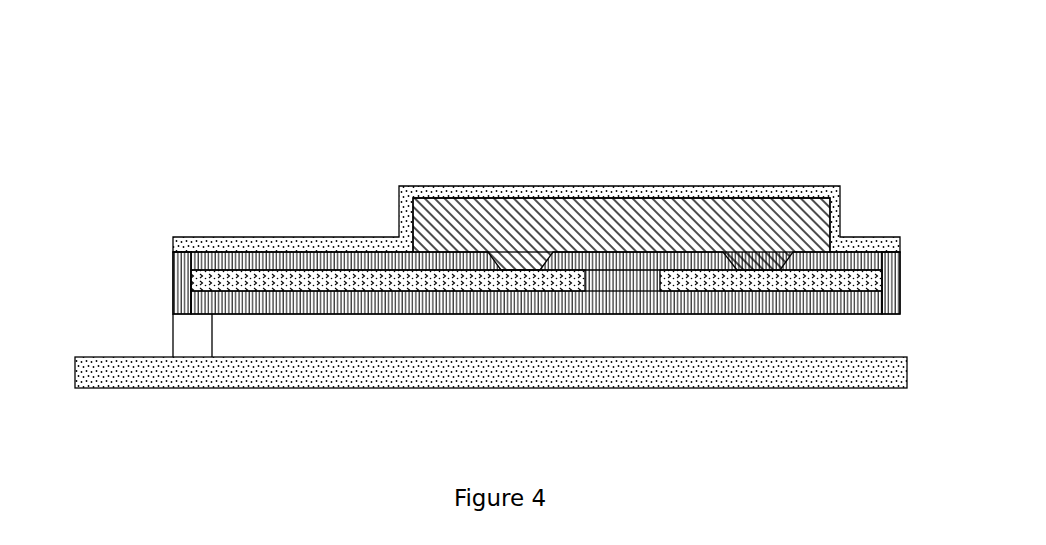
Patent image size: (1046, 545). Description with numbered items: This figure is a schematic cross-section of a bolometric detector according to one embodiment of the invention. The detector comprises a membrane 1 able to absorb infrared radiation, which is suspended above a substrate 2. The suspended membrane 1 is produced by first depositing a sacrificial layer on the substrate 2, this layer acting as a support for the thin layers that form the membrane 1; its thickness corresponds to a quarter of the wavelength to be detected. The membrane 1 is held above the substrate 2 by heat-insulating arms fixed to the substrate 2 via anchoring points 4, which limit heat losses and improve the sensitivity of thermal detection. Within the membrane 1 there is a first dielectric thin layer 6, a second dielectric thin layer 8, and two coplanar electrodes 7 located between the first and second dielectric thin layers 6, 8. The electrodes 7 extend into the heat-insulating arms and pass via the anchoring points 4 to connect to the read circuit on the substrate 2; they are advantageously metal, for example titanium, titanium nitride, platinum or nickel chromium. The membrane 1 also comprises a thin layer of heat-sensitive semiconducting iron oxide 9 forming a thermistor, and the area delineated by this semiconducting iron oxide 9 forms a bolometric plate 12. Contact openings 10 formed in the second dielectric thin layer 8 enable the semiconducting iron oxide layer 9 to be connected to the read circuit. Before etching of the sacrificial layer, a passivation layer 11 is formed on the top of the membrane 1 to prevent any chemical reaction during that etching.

The membrane 1 is at (368, 122).
The substrate 2 is at (822, 372).
The anchoring points 4 is at (188, 341).
The first dielectric thin layer 6 is at (232, 306).
The coplanar electrodes 7 is at (360, 282).
The second dielectric thin layer 8 is at (190, 264).
The semiconducting iron oxide layer 9 is at (573, 215).
The contact openings 10 is at (760, 268).
The passivation layer 11 is at (515, 192).
The bolometric plate 12 is at (617, 98).